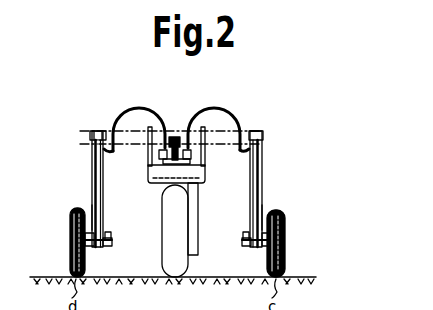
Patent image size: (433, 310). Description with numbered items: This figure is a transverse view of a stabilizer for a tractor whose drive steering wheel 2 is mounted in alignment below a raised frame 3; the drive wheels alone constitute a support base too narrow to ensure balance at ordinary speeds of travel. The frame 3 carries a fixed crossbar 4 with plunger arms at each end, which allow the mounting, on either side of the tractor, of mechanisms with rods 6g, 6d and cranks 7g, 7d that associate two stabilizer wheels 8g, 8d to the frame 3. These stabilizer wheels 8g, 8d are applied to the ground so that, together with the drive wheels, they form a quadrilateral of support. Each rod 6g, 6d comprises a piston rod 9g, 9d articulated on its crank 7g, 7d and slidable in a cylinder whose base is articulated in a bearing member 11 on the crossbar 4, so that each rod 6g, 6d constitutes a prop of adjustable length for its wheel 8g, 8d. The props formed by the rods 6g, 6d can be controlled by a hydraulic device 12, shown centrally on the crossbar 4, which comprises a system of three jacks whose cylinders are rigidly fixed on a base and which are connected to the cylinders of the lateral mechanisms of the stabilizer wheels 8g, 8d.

The drive steering wheel 2 is at (187, 258).
The frame 3 is at (157, 178).
The fixed crossbar 4 is at (127, 142).
The rod 6g is at (90, 170).
The rod 6d is at (265, 189).
The crank 7g is at (105, 239).
The crank 7d is at (243, 239).
The wheel 8g is at (70, 243).
The wheel 8d is at (285, 243).
The piston rod 9g is at (101, 218).
The piston rod 9d is at (250, 218).
The bearing member 11 is at (90, 135).
The hydraulic device 12 is at (177, 127).